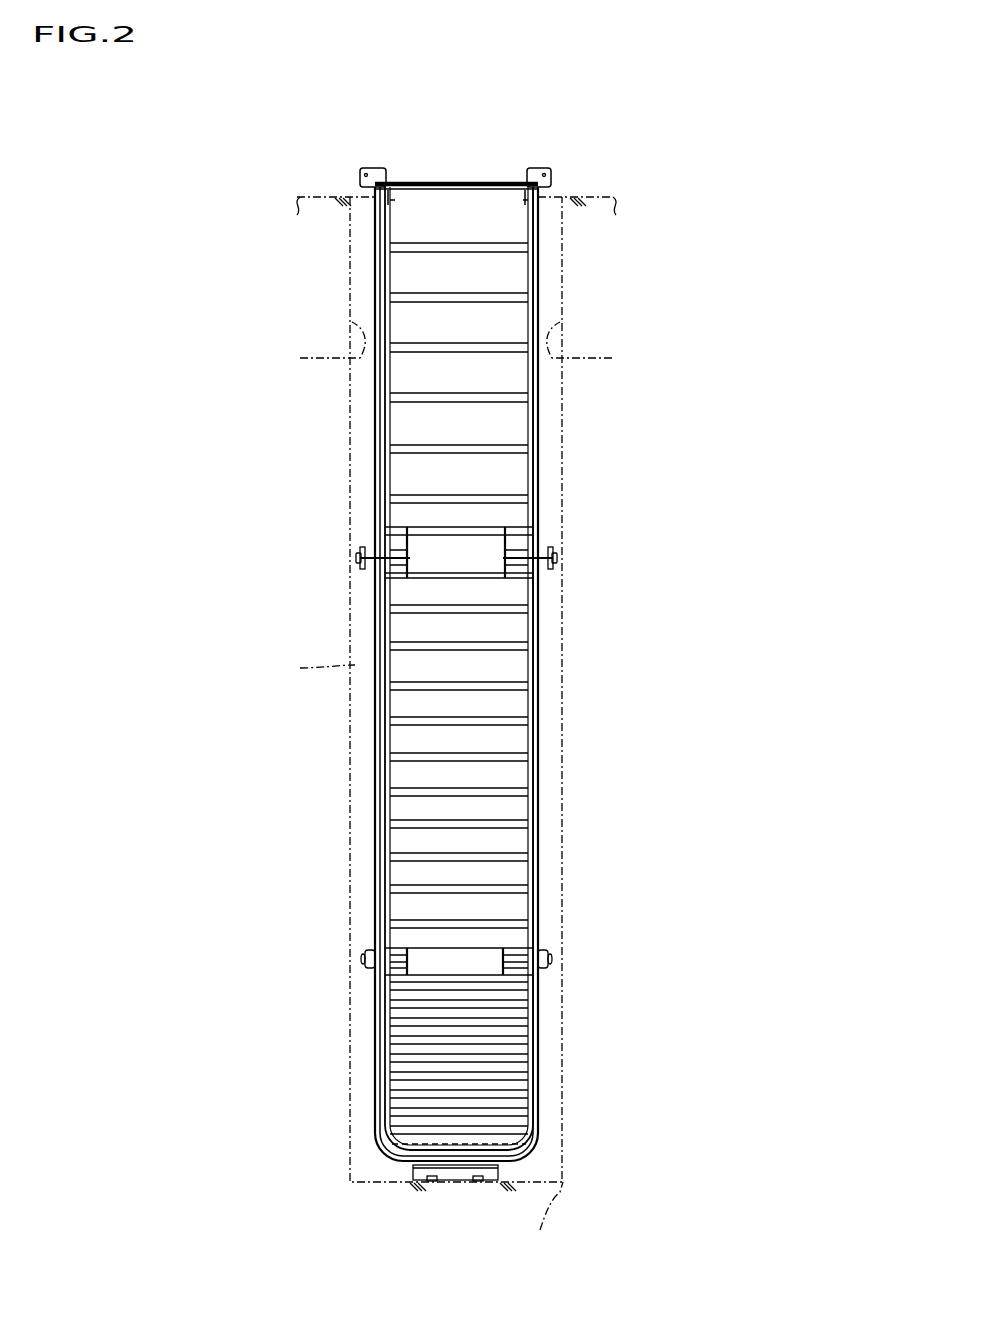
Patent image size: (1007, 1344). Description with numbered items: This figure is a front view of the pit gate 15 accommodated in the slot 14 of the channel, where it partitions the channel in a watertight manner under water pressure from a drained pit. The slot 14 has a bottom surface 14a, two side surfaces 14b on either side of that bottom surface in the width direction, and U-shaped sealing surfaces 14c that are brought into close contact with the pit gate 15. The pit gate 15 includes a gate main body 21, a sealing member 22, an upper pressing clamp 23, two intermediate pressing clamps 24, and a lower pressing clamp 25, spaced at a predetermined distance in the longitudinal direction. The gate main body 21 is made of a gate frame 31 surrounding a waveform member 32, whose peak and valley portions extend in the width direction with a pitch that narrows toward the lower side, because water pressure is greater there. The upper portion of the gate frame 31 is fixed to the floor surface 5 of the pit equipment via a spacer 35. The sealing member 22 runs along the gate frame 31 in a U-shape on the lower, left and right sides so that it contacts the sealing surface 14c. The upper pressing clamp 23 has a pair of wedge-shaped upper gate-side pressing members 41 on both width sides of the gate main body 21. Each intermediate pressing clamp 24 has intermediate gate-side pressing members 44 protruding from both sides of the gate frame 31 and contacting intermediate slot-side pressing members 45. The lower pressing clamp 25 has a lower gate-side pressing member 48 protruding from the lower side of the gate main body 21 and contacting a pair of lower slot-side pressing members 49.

The pit gate 15 is at (474, 674).
The upper pressing clamp 23 is at (518, 140).
The spacer 35 is at (375, 193).
The floor surface 5 is at (603, 198).
The upper gate-side pressing member 41 is at (393, 200).
The slot 14 is at (368, 299).
The side surface 14b is at (457, 347).
The sealing surface 14c is at (308, 670).
The bottom surface 14a is at (540, 1221).
The intermediate gate-side pressing member 44 is at (372, 548).
The intermediate pressing clamp 24 is at (534, 737).
The intermediate slot-side pressing member 45 is at (362, 568).
The gate main body 21 is at (533, 668).
The waveform member 32 is at (413, 738).
The gate frame 31 is at (537, 755).
The sealing member 22 is at (531, 843).
The lower gate-side pressing member 48 is at (500, 1175).
The lower pressing clamp 25 is at (458, 1227).
The lower slot-side pressing member 49 is at (433, 1181).